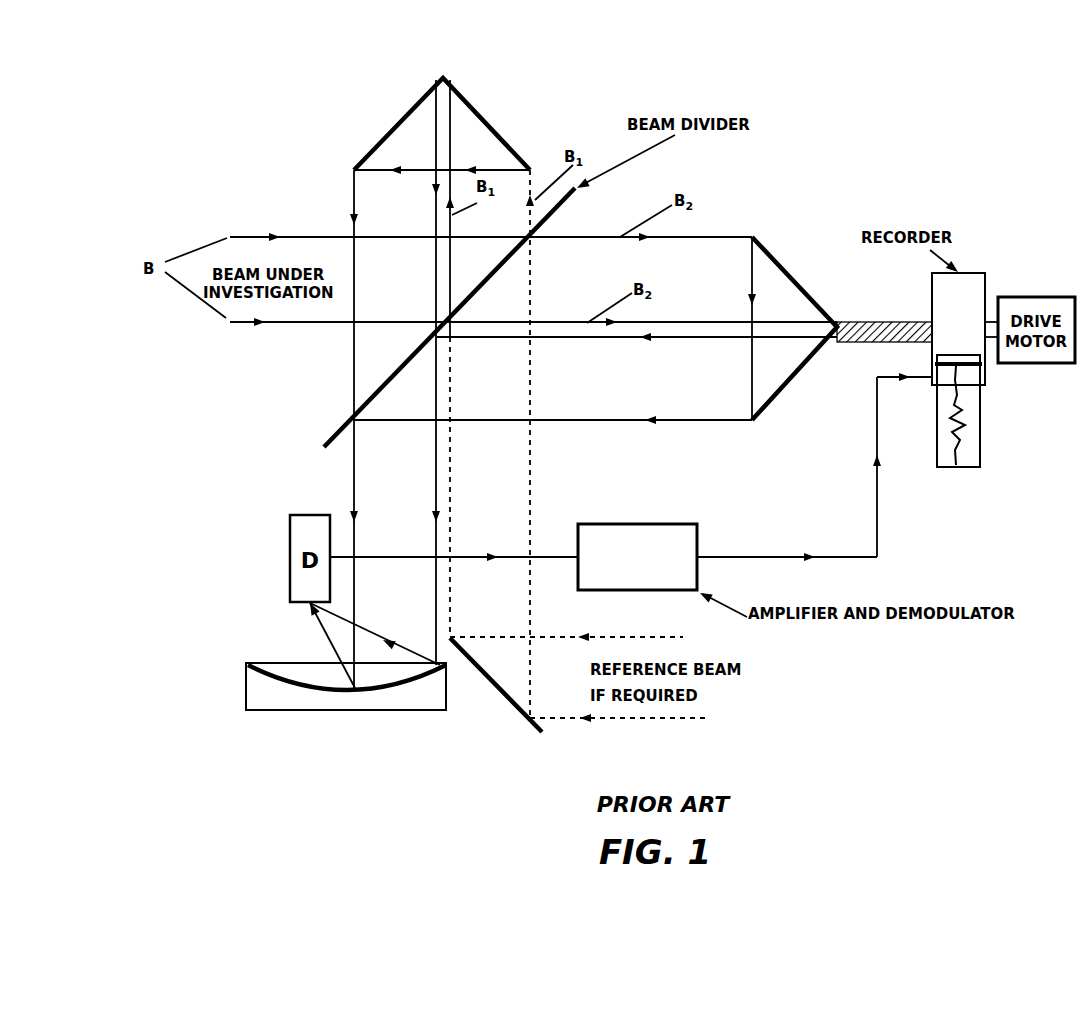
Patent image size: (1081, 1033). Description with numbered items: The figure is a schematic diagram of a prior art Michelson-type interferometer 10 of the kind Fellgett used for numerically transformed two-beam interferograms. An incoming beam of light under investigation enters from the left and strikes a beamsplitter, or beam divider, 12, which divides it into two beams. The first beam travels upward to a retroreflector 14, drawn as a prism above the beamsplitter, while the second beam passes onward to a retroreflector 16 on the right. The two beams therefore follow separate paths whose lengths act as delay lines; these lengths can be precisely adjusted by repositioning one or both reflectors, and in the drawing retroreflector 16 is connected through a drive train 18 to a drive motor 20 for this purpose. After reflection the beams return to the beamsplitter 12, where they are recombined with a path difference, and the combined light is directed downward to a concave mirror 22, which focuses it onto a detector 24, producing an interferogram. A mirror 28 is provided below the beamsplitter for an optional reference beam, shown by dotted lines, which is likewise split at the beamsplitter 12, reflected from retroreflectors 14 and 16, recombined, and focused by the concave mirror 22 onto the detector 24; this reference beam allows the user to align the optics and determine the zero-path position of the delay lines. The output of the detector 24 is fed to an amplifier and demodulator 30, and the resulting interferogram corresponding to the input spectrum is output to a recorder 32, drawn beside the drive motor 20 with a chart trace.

The Michelson-type interferometer 10 is at (322, 107).
The beamsplitter 12 is at (514, 294).
The retroreflector 14 is at (477, 108).
The retroreflector 16 is at (787, 270).
The drive train 18 is at (857, 345).
The drive motor 20 is at (1018, 365).
The concave mirror 22 is at (300, 710).
The detector 24 is at (298, 514).
The mirror 28 is at (525, 715).
The amplifier and demodulator 30 is at (638, 523).
The recorder 32 is at (970, 272).